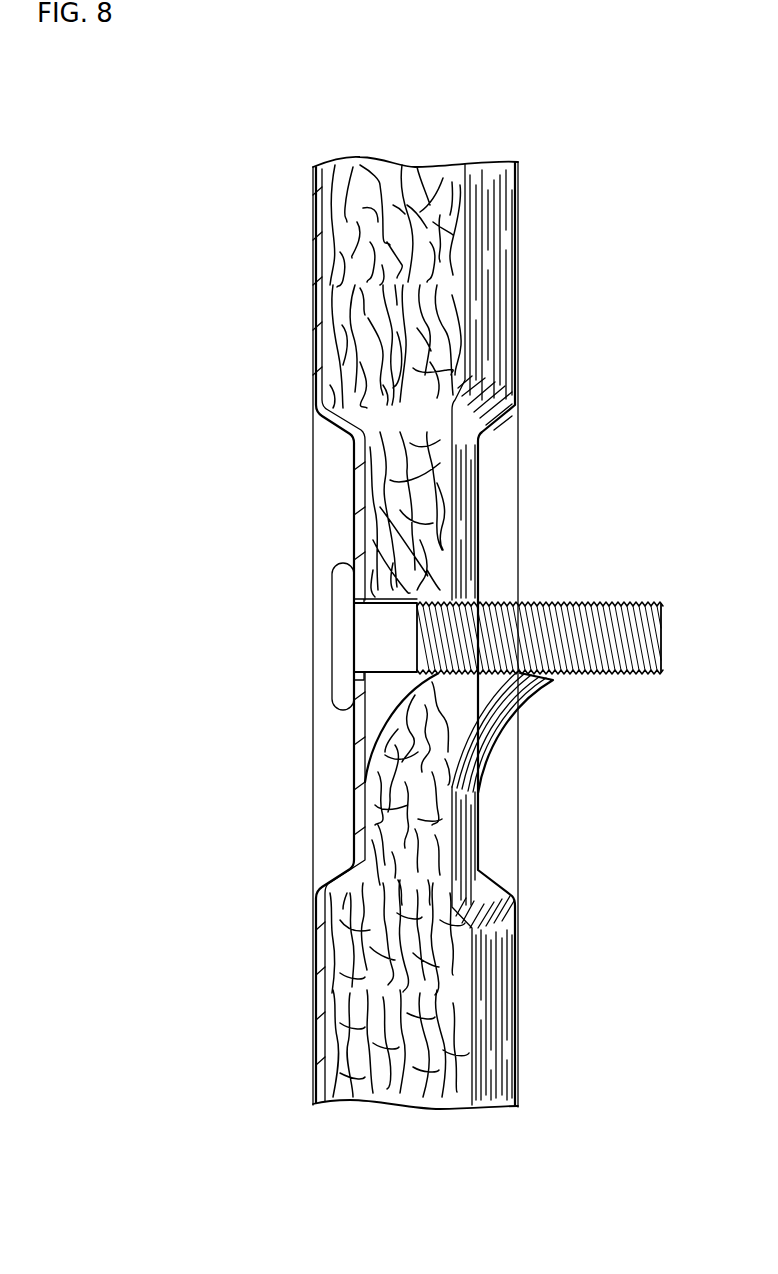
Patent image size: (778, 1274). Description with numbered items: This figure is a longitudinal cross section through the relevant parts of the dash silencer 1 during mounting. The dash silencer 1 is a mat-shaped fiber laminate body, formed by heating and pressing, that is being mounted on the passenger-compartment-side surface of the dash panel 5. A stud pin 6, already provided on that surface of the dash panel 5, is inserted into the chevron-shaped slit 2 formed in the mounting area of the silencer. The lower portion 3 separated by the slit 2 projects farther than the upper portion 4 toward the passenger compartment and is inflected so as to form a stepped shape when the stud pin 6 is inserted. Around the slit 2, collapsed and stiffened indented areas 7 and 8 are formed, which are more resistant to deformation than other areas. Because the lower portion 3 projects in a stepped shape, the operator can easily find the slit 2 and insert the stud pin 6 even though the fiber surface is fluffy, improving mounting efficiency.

The dash silencer 1 is at (414, 162).
The slit 2 is at (416, 612).
The lower portion 3 is at (536, 690).
The upper portion 4 is at (485, 592).
The dash panel 5 is at (313, 308).
The stud pin 6 is at (596, 602).
The indented area 7 is at (360, 470).
The indented area 8 is at (478, 470).